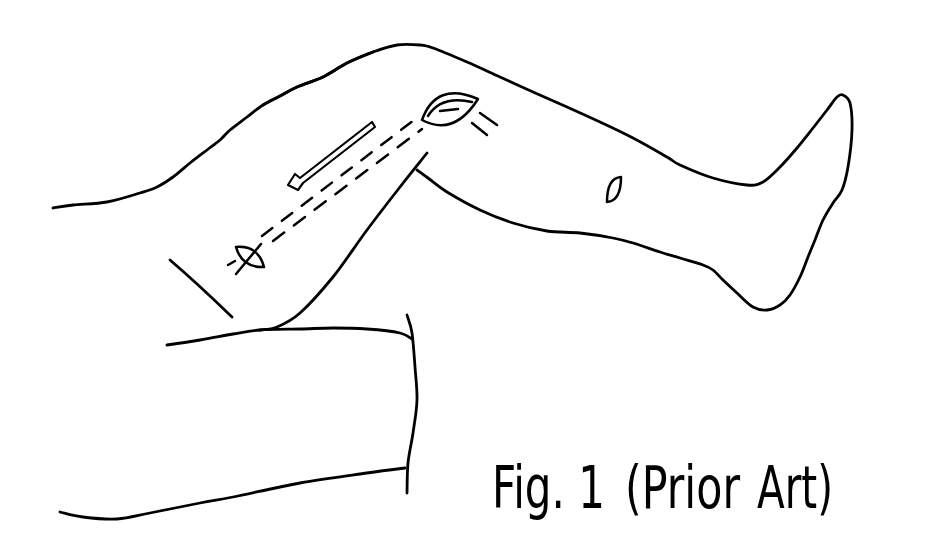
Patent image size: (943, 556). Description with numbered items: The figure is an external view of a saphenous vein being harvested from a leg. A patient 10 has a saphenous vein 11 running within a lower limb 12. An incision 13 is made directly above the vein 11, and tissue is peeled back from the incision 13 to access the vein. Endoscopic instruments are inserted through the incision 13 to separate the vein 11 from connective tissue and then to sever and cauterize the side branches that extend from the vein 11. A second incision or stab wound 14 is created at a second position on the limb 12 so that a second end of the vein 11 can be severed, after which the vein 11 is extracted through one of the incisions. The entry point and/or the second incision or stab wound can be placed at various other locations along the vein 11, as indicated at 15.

The patient 10 is at (125, 140).
The saphenous vein 11 is at (340, 185).
The lower limb 12 is at (323, 78).
The incision 13 is at (450, 93).
The second incision or stab wound 14 is at (243, 245).
The alternative incision location 15 is at (612, 177).